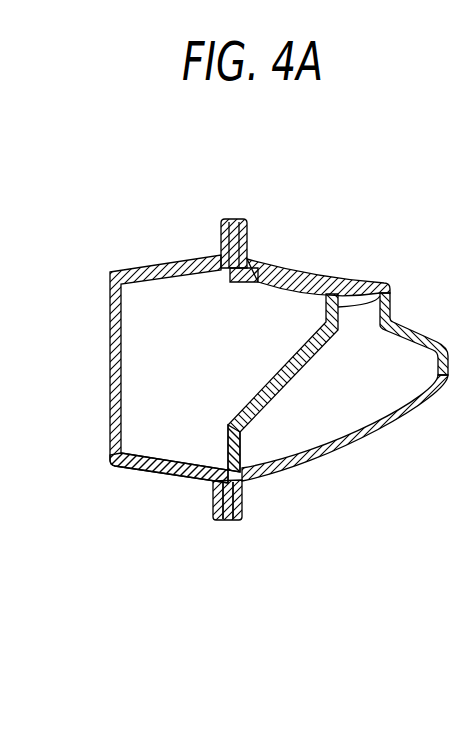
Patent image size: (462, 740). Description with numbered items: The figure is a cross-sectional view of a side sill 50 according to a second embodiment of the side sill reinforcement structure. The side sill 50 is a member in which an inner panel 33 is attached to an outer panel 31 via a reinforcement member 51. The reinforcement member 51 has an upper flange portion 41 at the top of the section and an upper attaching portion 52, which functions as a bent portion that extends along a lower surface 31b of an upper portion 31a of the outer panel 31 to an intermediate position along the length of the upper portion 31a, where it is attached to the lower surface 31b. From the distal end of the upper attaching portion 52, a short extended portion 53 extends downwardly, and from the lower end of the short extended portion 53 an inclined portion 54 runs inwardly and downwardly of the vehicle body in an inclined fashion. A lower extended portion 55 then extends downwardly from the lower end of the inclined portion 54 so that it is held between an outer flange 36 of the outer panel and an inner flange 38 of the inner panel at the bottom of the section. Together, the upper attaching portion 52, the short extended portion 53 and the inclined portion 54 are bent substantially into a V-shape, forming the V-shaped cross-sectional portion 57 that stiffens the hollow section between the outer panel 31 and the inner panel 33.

The outer panel 31 is at (303, 374).
The upper portion 31a is at (355, 275).
The lower surface 31b is at (251, 288).
The inner panel 33 is at (145, 478).
The outer flange 36 is at (243, 492).
The inner flange 38 is at (217, 500).
The upper flange portion 41 is at (237, 217).
The side sill 50 is at (249, 364).
The reinforcement member 51 is at (287, 383).
The upper attaching portion 52 is at (290, 293).
The short extended portion 53 is at (391, 287).
The inclined portion 54 is at (262, 384).
The lower extended portion 55 is at (226, 443).
The V-shaped cross-sectional portion 57 is at (261, 353).